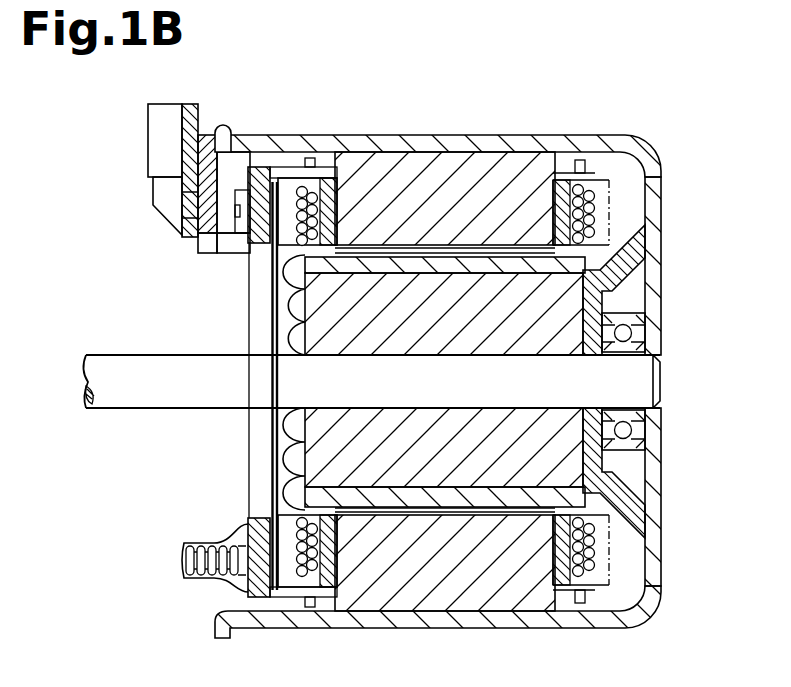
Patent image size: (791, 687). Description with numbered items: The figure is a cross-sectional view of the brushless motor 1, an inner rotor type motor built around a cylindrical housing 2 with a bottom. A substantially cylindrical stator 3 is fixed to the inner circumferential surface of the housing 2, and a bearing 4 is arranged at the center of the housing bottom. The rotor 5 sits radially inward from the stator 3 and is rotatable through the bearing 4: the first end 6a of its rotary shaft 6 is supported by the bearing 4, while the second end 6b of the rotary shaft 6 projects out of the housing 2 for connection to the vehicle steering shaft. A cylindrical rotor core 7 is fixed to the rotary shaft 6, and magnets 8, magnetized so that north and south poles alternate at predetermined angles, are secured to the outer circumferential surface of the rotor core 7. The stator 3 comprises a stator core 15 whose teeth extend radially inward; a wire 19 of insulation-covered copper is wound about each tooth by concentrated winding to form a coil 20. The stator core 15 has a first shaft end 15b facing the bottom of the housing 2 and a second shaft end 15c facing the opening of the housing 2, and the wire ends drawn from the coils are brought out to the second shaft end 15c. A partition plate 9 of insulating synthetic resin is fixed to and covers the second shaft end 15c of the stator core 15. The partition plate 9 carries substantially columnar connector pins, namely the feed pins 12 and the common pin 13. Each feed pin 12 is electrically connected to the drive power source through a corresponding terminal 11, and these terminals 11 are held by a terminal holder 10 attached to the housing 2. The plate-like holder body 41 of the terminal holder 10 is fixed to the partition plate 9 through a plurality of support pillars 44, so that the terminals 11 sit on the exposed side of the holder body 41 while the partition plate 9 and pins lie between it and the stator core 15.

The brushless motor 1 is at (692, 116).
The housing 2 is at (622, 135).
The stator 3 is at (503, 146).
The bearing 4 is at (640, 318).
The rotor 5 is at (596, 292).
The rotary shaft 6 is at (655, 372).
The first end 6a is at (653, 400).
The second end 6b is at (128, 400).
The rotor core 7 is at (463, 477).
The magnets 8 is at (408, 497).
The partition plate 9 is at (267, 170).
The terminal holder 10 is at (195, 112).
The terminal 11 is at (155, 200).
The feed pin 12 is at (225, 200).
The common pin 13 is at (180, 562).
The stator core 15 is at (443, 158).
The first shaft end 15b is at (622, 243).
The second shaft end 15c is at (273, 511).
The wire 19 is at (592, 203).
The coil 20 is at (590, 538).
The holder body 41 is at (208, 236).
The support pillar 44 is at (230, 240).